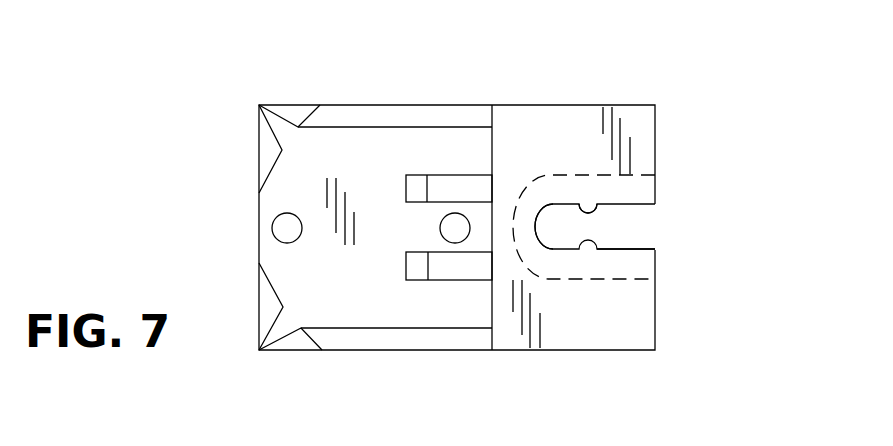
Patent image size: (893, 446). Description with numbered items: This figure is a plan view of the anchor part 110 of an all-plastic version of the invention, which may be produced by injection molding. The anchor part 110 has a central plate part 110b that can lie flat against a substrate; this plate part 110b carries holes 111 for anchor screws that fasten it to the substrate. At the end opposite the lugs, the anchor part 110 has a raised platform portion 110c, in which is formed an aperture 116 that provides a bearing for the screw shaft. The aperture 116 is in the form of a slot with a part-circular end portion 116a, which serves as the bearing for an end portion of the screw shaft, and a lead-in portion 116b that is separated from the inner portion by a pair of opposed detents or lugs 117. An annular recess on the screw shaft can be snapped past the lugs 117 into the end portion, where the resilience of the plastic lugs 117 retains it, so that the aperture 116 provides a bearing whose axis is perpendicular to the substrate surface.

The anchor part 110 is at (622, 77).
The central plate part 110b is at (355, 145).
The raised platform portion 110c is at (537, 145).
The holes 111 is at (287, 228).
The aperture 116 is at (649, 227).
The part-circular end portion 116a is at (558, 243).
The lead-in portion 116b is at (638, 250).
The detents or lugs 117 is at (590, 212).